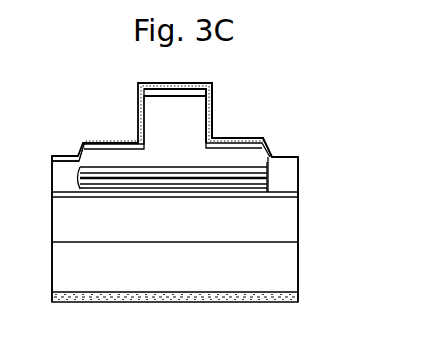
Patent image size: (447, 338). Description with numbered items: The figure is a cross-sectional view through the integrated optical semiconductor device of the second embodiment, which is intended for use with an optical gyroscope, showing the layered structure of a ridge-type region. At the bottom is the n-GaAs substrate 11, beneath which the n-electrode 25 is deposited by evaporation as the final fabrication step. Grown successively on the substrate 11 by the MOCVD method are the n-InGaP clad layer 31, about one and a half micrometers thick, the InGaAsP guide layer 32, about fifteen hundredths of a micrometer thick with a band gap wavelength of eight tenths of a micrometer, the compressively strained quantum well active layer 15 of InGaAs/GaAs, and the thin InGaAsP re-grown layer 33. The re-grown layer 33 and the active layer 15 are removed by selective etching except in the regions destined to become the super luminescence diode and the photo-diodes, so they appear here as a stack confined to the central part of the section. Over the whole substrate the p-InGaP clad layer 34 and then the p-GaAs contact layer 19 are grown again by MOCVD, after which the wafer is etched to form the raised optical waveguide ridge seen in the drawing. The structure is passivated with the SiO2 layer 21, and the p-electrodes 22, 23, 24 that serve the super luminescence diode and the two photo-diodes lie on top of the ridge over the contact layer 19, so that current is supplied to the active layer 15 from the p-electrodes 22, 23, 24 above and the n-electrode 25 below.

The n-GaAs substrate 11 is at (287, 275).
The compressively strained quantum well active layer 15 is at (80, 182).
The p-GaAs contact layer 19 is at (136, 89).
The SiO2 layer 21 is at (265, 141).
The p-electrode 22 is at (208, 112).
The p-electrode 23 is at (175, 113).
The p-electrode 24 is at (175, 113).
The n-electrode 25 is at (52, 292).
The n-In0.5Ga0.5P clad layer 31 is at (293, 214).
The InGaAsP guide layer 32 is at (297, 193).
The InGaAsP re-grown layer 33 is at (157, 170).
The p-In0.5Ga0.5P clad layer 34 is at (152, 133).